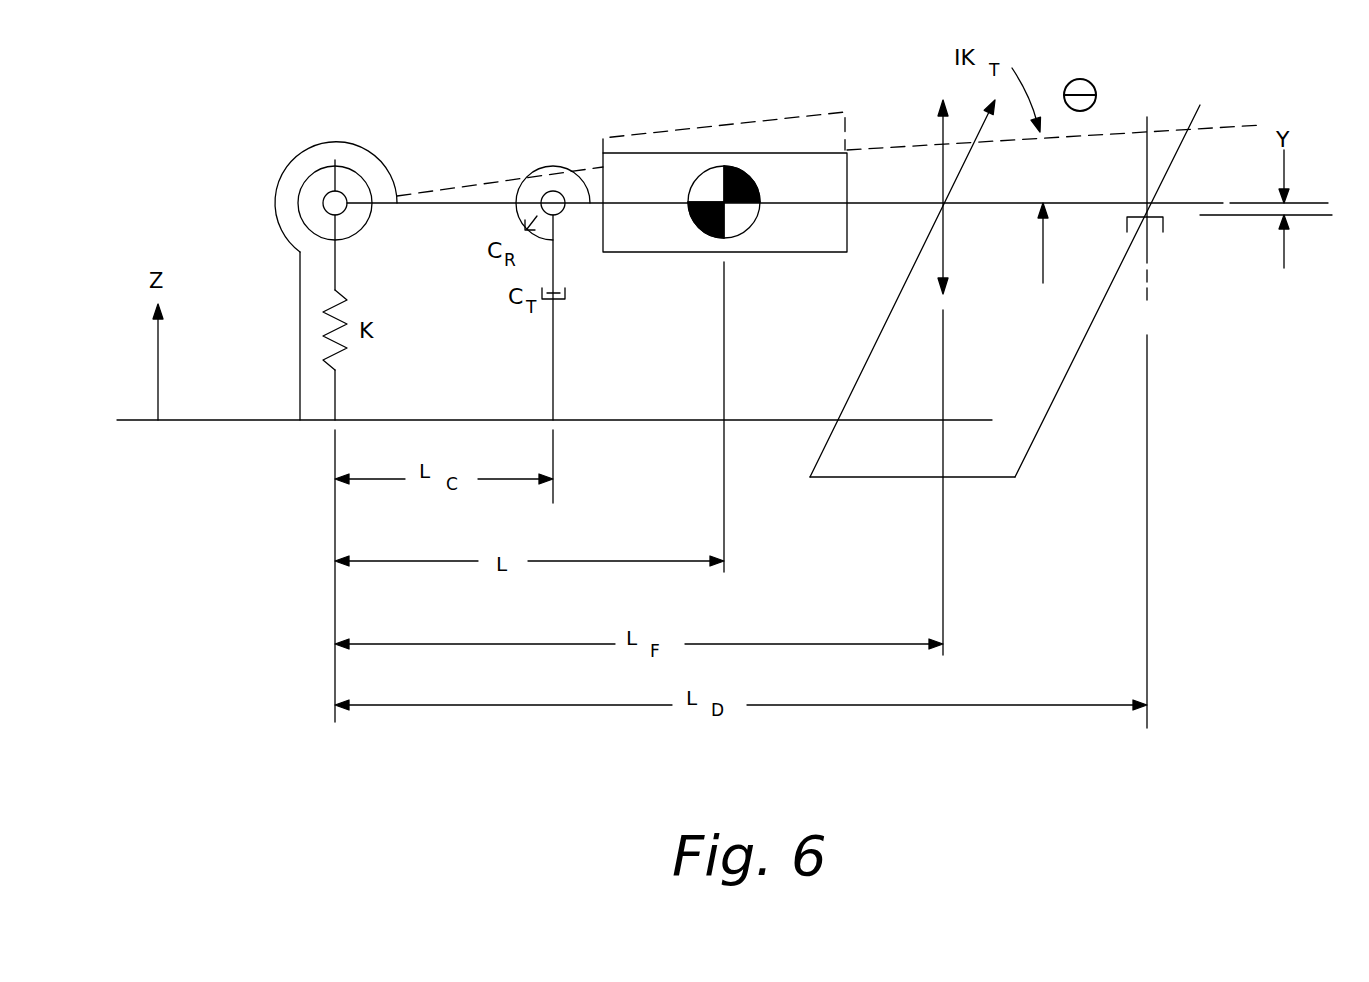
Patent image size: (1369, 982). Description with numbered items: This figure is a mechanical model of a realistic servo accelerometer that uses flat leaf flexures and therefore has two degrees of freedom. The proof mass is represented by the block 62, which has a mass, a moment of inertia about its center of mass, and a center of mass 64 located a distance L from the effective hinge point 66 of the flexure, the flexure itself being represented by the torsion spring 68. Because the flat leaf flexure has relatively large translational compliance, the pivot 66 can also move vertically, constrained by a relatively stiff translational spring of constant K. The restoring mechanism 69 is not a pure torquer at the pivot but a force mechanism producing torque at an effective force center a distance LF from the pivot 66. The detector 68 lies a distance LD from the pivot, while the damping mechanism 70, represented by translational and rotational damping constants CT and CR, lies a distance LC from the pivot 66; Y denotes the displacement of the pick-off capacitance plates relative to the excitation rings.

The block 62 is at (847, 182).
The center of mass 64 is at (693, 186).
The effective hinge point 66 is at (335, 175).
The torsion spring 68 is at (398, 184).
The restoring mechanism 69 is at (1068, 367).
The damping mechanism 70 is at (544, 156).